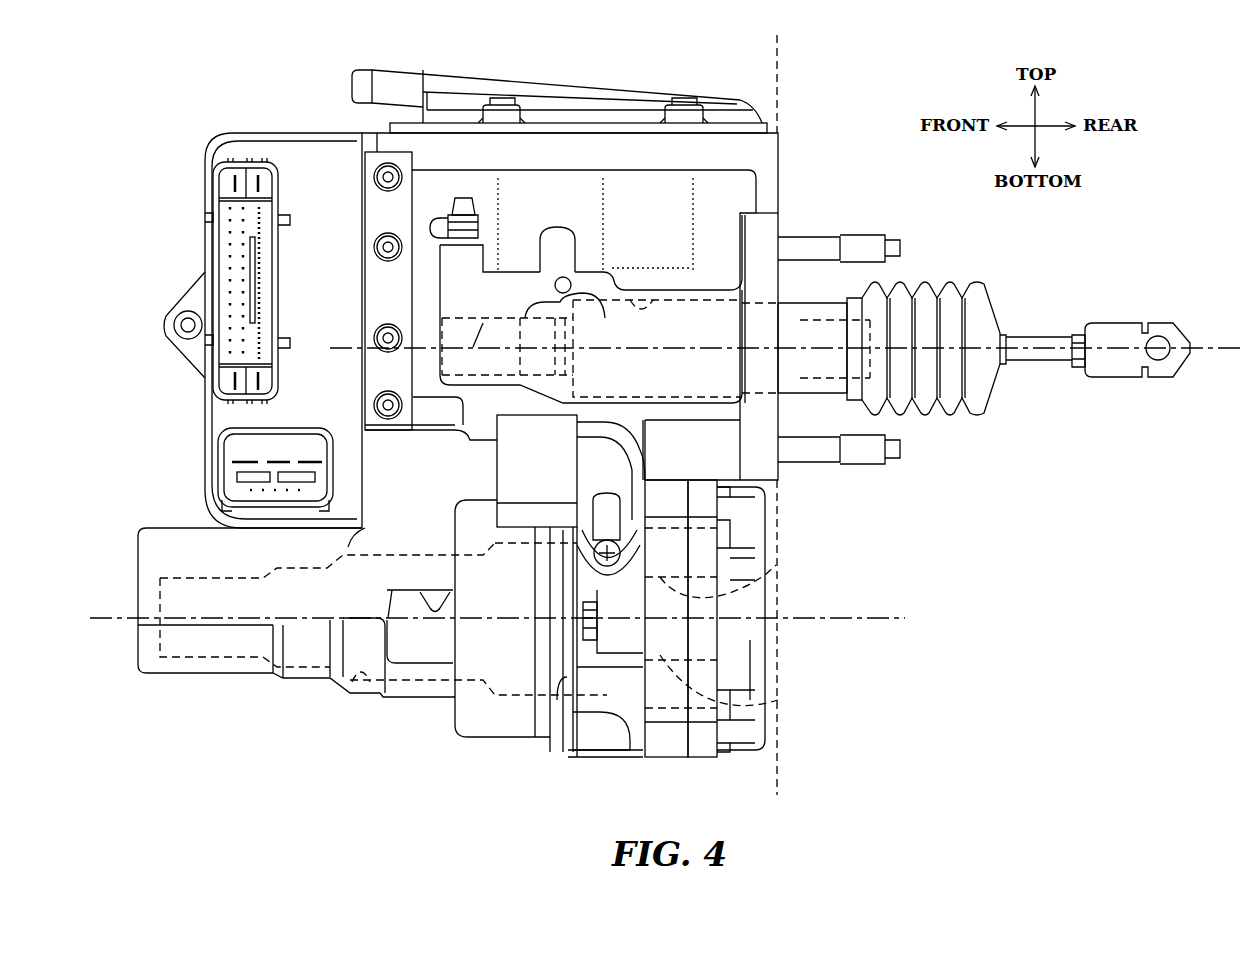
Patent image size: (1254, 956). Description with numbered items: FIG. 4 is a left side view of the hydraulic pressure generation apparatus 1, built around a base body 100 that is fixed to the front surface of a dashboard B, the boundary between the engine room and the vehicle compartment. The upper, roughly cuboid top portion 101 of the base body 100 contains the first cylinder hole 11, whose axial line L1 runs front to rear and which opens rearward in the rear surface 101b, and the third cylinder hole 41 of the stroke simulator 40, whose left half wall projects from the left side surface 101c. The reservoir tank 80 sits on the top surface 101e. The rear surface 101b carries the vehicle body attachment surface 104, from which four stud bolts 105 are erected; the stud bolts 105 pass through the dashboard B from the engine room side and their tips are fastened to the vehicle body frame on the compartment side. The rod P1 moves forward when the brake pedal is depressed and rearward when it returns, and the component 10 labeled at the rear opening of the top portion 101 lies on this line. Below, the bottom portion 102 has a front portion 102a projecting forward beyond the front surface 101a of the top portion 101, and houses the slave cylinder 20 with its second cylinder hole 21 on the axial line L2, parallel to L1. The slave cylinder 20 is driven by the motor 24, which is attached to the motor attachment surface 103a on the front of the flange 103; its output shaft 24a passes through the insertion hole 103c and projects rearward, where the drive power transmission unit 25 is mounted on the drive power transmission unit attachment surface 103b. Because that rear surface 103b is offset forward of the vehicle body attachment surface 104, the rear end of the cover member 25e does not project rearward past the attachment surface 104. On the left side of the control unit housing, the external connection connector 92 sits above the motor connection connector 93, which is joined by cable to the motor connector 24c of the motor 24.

The hydraulic pressure generation apparatus 1 is at (205, 128).
The external connection connector 92 is at (213, 258).
The motor connection connector 93 is at (220, 476).
The front surface of the top portion 101a is at (362, 207).
The base body 100 is at (779, 135).
The top portion 101 is at (758, 178).
The rear surface of the top portion 101b is at (778, 187).
The left side surface of the top portion 101c is at (640, 198).
The top surface of the top portion 101e is at (562, 123).
The vehicle body attachment surface 104 is at (778, 228).
The stud bolts 105 is at (820, 240).
The reservoir tank 80 is at (455, 82).
The dashboard B is at (777, 58).
The stroke simulator 40 is at (700, 296).
The third cylinder hole 41 is at (650, 290).
The input rod 10 is at (800, 385).
The first cylinder hole 11 is at (905, 280).
The rod P1 is at (1035, 336).
The axial line of the first cylinder hole L1 is at (1207, 348).
The motor connector 24c is at (525, 450).
The motor 24 is at (482, 733).
The output shaft 24a is at (745, 705).
The flange 103 is at (667, 740).
The motor attachment surface 103a is at (642, 715).
The drive power transmission unit attachment surface 103b is at (688, 735).
The insertion hole 103c is at (776, 565).
The drive power transmission unit 25 is at (768, 605).
The cover member 25e is at (745, 650).
The axial line of the second cylinder hole L2 is at (905, 620).
The front portion of the bottom portion 102a is at (195, 670).
The bottom portion 102 is at (410, 690).
The slave cylinder 20 is at (300, 678).
The second cylinder hole 21 is at (357, 690).